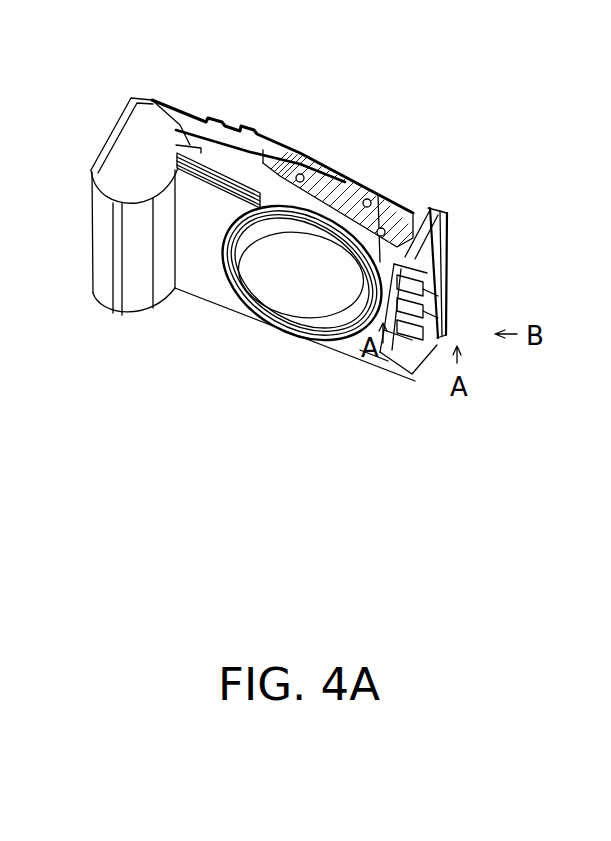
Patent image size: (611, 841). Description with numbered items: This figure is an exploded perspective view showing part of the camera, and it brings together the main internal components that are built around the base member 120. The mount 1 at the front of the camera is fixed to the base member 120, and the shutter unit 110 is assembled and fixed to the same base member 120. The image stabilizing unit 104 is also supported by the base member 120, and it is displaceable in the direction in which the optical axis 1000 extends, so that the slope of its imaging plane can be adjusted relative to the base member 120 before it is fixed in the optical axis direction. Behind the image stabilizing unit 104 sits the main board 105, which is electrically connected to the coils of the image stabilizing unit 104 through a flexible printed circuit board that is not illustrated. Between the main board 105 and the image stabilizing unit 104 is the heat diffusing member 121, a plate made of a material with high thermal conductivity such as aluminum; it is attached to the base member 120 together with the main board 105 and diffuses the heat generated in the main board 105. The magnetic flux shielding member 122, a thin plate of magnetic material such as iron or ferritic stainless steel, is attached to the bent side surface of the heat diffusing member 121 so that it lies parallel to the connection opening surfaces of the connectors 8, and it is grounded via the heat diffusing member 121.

The optical axis 1000 is at (320, 247).
The mount 1 is at (292, 330).
The base member 120 is at (183, 255).
The main board 105 is at (253, 125).
The heat diffusing member 121 is at (292, 160).
The image stabilizing unit 104 is at (360, 185).
The shutter unit 110 is at (415, 207).
The magnetic flux shielding member 122 is at (445, 264).
The connectors 8 is at (440, 272).